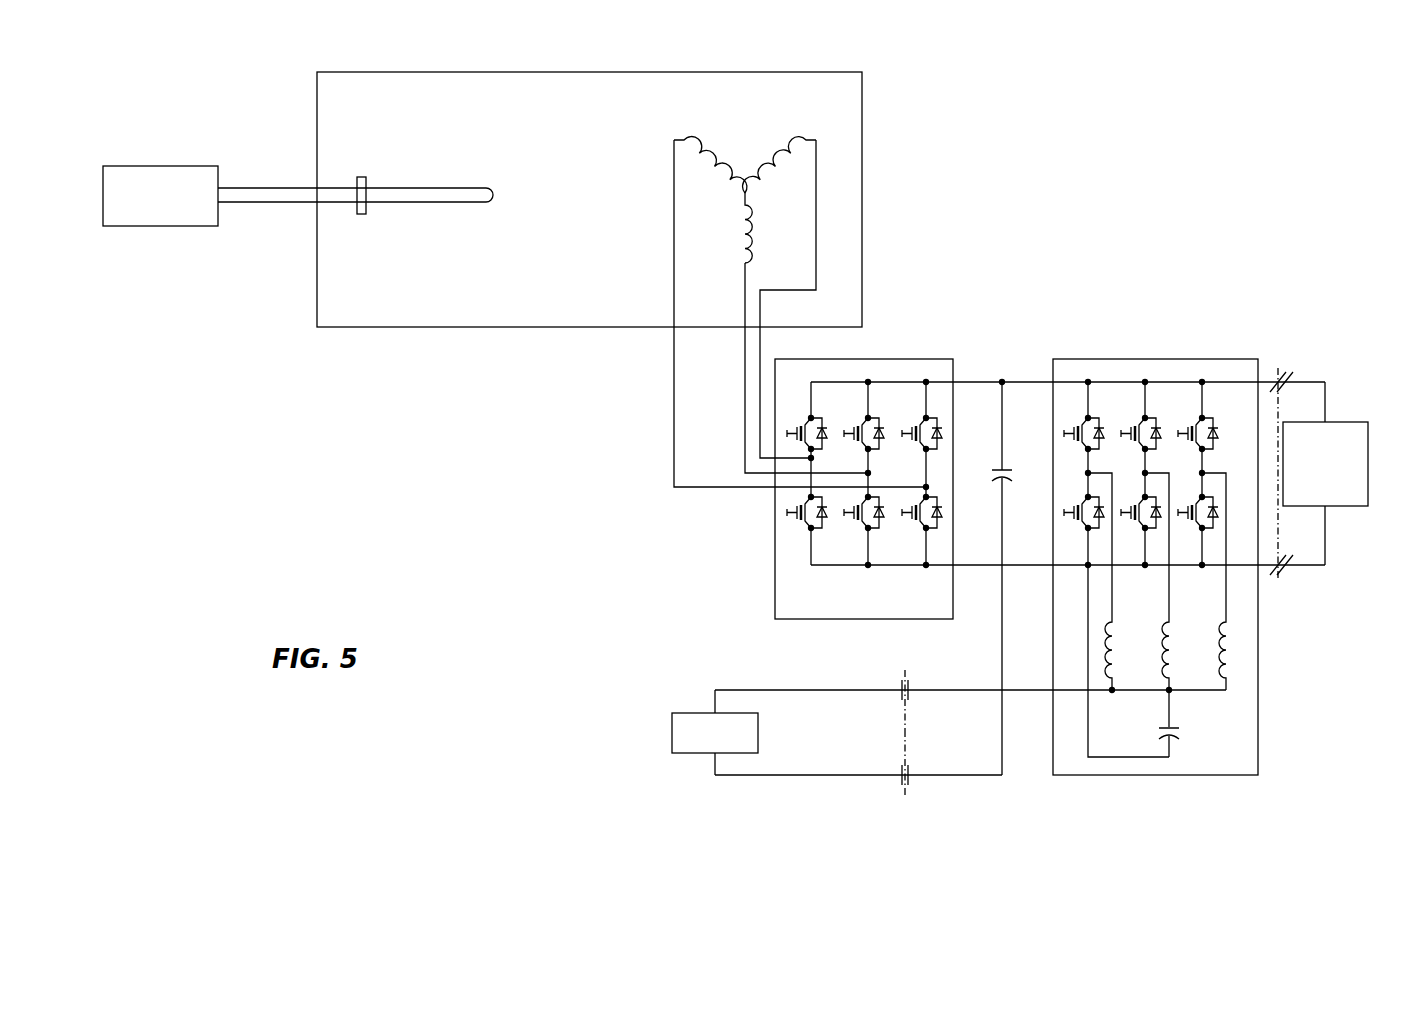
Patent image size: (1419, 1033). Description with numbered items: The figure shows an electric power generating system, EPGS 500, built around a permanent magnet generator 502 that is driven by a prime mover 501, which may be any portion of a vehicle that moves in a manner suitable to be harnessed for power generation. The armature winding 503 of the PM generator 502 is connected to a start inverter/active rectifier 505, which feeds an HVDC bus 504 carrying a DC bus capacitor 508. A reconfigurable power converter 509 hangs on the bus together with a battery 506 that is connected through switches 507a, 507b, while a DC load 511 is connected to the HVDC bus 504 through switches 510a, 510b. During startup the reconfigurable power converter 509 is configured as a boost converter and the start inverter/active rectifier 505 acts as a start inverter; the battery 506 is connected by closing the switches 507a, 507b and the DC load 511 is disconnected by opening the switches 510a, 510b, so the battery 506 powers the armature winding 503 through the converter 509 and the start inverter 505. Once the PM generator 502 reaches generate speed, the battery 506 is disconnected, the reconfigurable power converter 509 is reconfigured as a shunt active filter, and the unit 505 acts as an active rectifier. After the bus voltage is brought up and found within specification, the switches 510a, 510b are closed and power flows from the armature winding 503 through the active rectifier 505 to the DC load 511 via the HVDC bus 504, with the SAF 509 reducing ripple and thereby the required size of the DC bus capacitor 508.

The EPGS 500 is at (1207, 110).
The prime mover 501 is at (160, 228).
The permanent magnet generator 502 is at (553, 66).
The armature winding 503 is at (754, 150).
The HVDC bus 504 is at (1017, 316).
The start inverter/active rectifier 505 is at (826, 621).
The battery 506 is at (672, 731).
The switch 507a is at (900, 770).
The switch 507b is at (909, 698).
The DC bus capacitor 508 is at (996, 493).
The reconfigurable power converter 509 is at (1258, 722).
The switch 510a is at (1285, 381).
The switch 510b is at (1321, 580).
The DC load 511 is at (1345, 506).